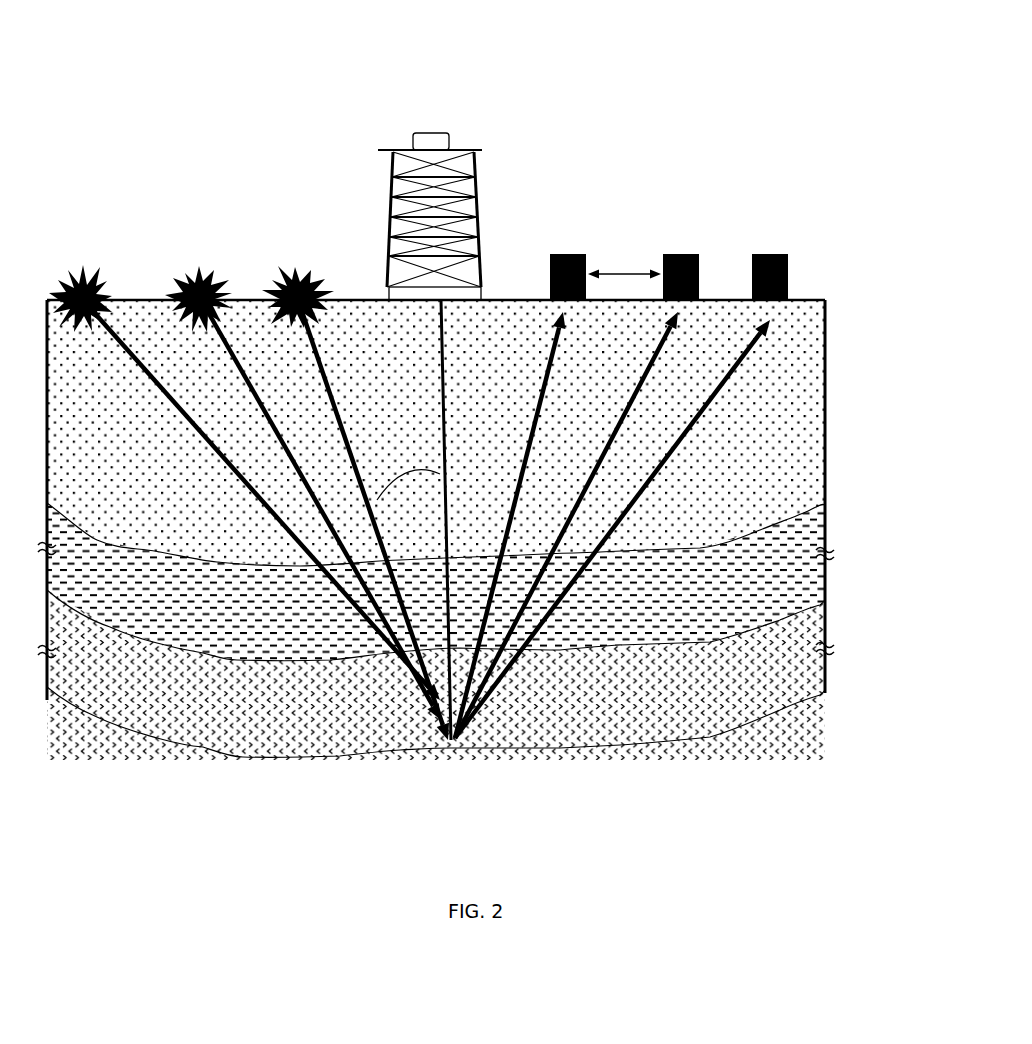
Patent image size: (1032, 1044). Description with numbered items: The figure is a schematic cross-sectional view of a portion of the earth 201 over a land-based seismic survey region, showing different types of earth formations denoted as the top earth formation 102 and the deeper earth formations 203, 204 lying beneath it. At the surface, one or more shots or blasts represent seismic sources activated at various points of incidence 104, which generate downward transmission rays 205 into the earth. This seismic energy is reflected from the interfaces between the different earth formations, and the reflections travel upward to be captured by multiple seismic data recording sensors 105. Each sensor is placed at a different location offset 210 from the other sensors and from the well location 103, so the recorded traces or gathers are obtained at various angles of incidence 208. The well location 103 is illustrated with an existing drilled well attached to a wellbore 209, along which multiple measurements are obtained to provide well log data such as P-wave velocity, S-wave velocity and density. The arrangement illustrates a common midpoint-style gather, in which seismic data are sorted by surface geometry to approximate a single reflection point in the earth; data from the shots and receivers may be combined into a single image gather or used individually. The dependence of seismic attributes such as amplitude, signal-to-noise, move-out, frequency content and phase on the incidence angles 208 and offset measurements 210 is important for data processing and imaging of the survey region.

The cross-sectional view of a portion of the earth 201 is at (585, 60).
The top earth formation 102 is at (783, 360).
The well location 103 is at (478, 158).
The points of incidence of seismic sources 104 is at (68, 272).
The seismic data recording sensors 105 is at (775, 255).
The earth formation 203 is at (785, 495).
The earth formation 204 is at (790, 587).
The downward transmission rays 205 is at (335, 628).
The angles of incidence 208 is at (412, 467).
The wellbore 209 is at (443, 352).
The location offsets 210 is at (624, 261).